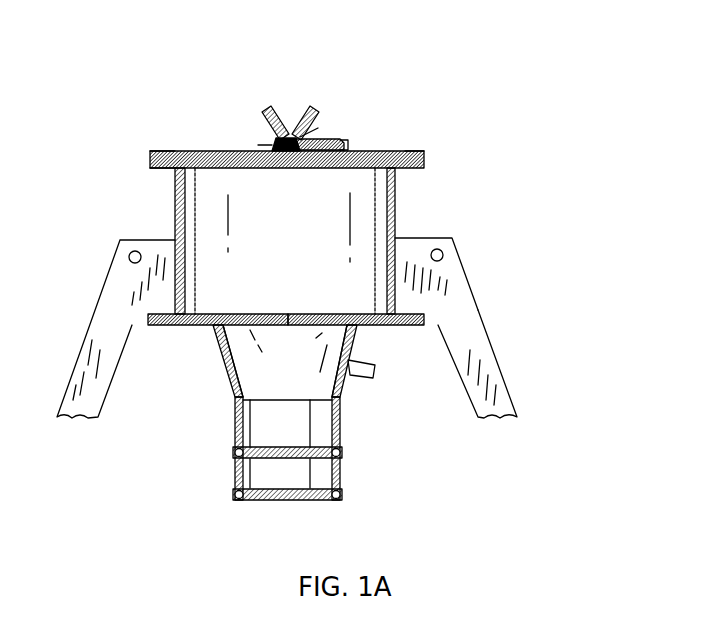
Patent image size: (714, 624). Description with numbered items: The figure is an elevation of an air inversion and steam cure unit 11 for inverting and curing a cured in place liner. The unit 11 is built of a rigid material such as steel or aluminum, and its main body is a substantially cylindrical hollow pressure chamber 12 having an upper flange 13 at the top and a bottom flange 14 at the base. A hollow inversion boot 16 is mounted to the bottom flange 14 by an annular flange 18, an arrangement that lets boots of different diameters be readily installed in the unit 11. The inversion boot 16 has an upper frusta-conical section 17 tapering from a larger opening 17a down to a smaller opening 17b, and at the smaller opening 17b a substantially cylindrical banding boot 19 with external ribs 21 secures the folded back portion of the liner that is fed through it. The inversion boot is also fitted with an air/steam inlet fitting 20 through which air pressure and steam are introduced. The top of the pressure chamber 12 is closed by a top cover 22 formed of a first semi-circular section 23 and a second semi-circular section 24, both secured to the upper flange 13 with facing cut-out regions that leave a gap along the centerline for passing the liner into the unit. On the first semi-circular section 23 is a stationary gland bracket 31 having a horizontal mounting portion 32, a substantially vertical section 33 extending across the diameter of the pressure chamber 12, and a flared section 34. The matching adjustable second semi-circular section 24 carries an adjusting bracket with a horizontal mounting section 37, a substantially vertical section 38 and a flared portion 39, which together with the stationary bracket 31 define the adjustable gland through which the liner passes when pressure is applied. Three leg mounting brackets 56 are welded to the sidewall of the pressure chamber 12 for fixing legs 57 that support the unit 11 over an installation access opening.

The air inversion and steam cure unit 11 is at (462, 181).
The pressure chamber 12 is at (288, 256).
The upper flange 13 is at (161, 170).
The bottom flange 14 is at (188, 320).
The inversion boot 16 is at (208, 428).
The frusta-conical section 17 is at (288, 356).
The larger opening 17a is at (258, 337).
The smaller opening 17b is at (237, 442).
The annular flange 18 is at (400, 328).
The banding boot 19 is at (362, 481).
The air/steam inlet fitting 20 is at (361, 378).
The external ribs 21 is at (248, 500).
The top cover 22 is at (378, 147).
The first semi-circular section 23 is at (174, 151).
The second semi-circular section 24 is at (408, 150).
The stationary gland bracket 31 is at (258, 140).
The horizontal mounting portion 32 is at (252, 147).
The vertical section 33 is at (256, 147).
The flared section 34 is at (258, 143).
The horizontal mounting section 37 is at (321, 140).
The vertical section 38 is at (315, 133).
The flared portion 39 is at (313, 108).
The leg mounting brackets 56 is at (445, 272).
The legs 57 is at (477, 348).